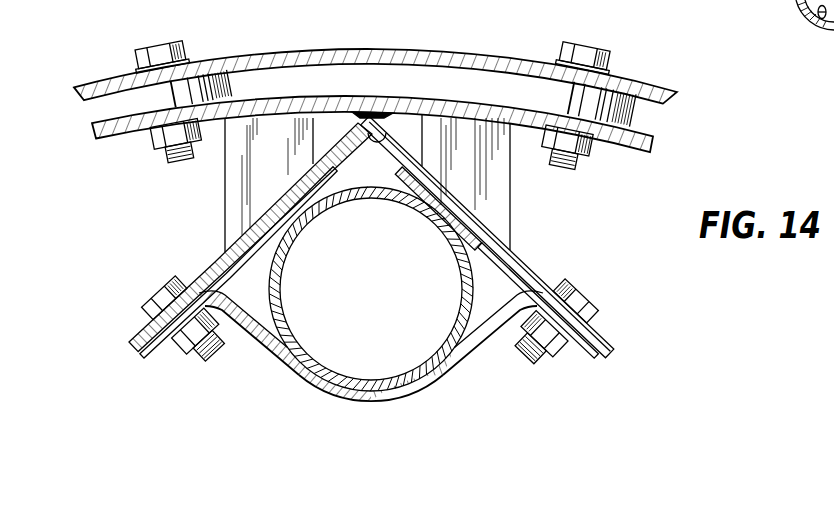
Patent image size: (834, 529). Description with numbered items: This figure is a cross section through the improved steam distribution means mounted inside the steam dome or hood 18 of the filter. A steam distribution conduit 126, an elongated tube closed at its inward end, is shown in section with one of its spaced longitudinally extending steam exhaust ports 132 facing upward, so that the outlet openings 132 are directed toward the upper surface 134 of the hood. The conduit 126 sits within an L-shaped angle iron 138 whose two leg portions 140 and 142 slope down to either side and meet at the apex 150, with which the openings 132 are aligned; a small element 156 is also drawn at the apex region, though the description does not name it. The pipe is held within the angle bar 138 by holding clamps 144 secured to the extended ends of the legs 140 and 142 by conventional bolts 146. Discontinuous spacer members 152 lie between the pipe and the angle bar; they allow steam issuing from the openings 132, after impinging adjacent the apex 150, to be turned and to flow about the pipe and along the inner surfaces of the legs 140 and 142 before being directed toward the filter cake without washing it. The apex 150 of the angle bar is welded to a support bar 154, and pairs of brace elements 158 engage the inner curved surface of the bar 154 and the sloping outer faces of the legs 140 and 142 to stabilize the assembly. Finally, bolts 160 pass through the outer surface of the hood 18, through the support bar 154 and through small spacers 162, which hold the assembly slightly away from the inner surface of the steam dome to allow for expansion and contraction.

The steam dome or hood 18 is at (644, 64).
The steam distribution conduit 126 is at (468, 322).
The steam exhaust port 132 is at (371, 203).
The upper surface of the hood 134 is at (660, 96).
The L-shaped angle iron 138 is at (205, 270).
The leg portion 140 is at (222, 255).
The leg portion 142 is at (512, 258).
The holding clamp 144 is at (343, 398).
The bolt 146 is at (147, 300).
The apex of the angle bar 150 is at (397, 114).
The spacer member 152 is at (253, 254).
The support bar 154 is at (88, 128).
The wedge spacer 156 is at (350, 118).
The brace element 158 is at (268, 136).
The bolt 160 is at (162, 45).
The spacer 162 is at (124, 92).